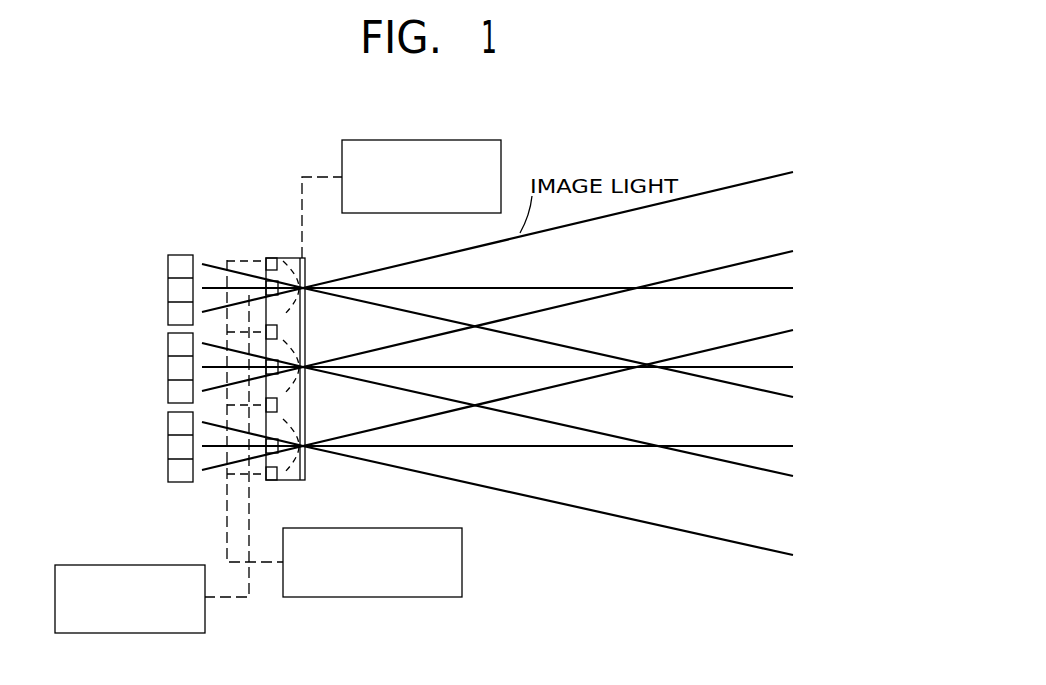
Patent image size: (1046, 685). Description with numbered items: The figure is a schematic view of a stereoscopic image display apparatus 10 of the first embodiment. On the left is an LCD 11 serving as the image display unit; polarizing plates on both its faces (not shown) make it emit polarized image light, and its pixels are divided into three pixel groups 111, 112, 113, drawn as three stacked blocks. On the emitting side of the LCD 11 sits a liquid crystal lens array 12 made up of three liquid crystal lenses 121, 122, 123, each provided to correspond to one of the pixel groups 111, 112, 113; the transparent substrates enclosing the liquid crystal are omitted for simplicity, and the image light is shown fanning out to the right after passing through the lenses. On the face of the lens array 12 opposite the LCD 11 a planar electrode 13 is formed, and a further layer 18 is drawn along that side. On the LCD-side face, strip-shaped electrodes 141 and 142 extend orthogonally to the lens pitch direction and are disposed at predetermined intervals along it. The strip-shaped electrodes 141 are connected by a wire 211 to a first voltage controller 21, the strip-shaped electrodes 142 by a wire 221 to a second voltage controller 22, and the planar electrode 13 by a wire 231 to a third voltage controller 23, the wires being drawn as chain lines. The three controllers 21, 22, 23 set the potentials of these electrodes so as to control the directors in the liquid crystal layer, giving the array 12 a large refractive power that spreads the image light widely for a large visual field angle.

The stereoscopic image display apparatus 10 is at (305, 148).
The LCD 11 is at (135, 246).
The pixel group 111 is at (155, 256).
The pixel group 112 is at (155, 334).
The pixel group 113 is at (155, 413).
The liquid crystal lens array 12 is at (262, 208).
The liquid crystal lens 121 is at (306, 317).
The liquid crystal lens 122 is at (306, 392).
The liquid crystal lens 123 is at (306, 470).
The planar electrode 13 is at (308, 264).
The common electrode 18 is at (305, 259).
The strip-shaped electrode 141 is at (265, 283).
The strip-shaped electrode 142 is at (268, 260).
The first voltage controller 21 is at (100, 634).
The second voltage controller 22 is at (463, 578).
The third voltage controller 23 is at (502, 153).
The wire 211 is at (237, 598).
The wire 221 is at (227, 529).
The wire 231 is at (312, 176).